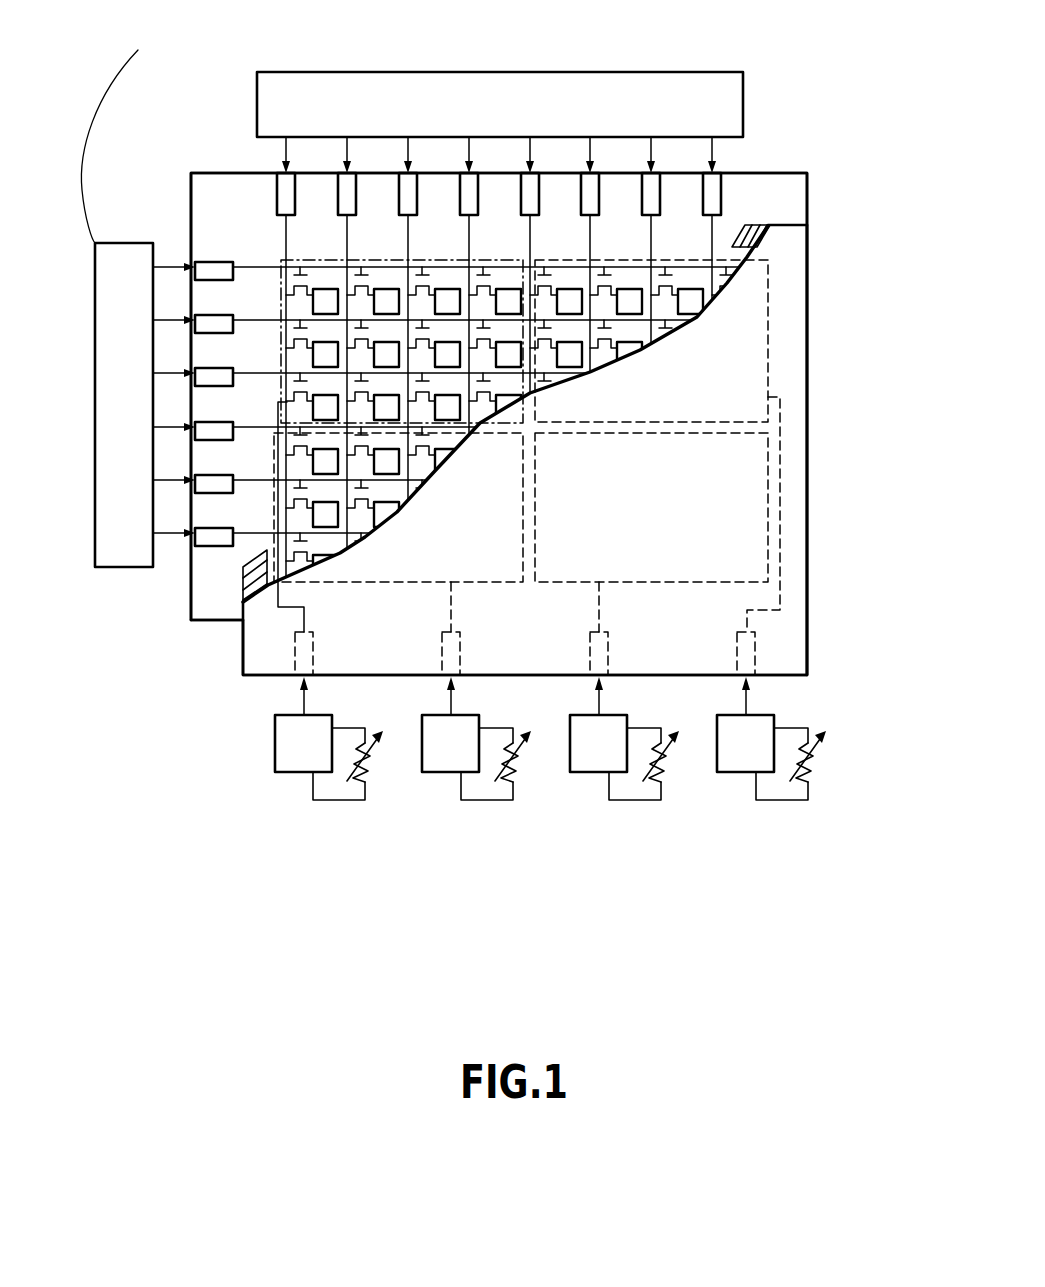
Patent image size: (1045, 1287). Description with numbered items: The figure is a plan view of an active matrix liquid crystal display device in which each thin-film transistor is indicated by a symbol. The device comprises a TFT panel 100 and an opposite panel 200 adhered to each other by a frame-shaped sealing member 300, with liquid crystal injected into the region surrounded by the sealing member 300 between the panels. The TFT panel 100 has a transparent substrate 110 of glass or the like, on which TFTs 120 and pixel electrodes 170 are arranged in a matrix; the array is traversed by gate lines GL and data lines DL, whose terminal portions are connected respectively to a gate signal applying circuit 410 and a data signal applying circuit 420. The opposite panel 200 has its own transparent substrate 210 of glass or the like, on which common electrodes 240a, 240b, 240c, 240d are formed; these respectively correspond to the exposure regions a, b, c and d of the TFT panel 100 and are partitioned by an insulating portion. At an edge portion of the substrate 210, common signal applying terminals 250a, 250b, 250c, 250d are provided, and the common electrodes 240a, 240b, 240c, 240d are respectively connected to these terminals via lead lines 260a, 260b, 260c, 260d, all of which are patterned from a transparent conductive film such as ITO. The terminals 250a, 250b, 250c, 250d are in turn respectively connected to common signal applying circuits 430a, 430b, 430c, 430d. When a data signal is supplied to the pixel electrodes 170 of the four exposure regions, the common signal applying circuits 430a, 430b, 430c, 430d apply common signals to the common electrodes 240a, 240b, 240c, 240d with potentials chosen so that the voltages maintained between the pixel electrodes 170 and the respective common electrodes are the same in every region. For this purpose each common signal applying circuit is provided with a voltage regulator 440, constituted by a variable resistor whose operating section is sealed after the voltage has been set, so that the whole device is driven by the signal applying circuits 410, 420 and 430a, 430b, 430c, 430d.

The TFT panel 100 is at (240, 168).
The transparent substrate 110 is at (787, 185).
The opposite panel 200 is at (243, 653).
The transparent substrate 210 is at (801, 654).
The TFT 120 is at (490, 280).
The pixel electrode 170 is at (627, 300).
The sealing member 300 is at (760, 225).
The common electrode 240a is at (310, 260).
The common electrode 240b is at (768, 330).
The common electrode 240c is at (300, 585).
The common electrode 240d is at (758, 467).
The lead line 260a is at (237, 568).
The lead line 260b is at (781, 522).
The lead line 260c is at (452, 612).
The lead line 260d is at (600, 612).
The common signal applying terminal 250a is at (308, 650).
The common signal applying terminal 250b is at (751, 650).
The common signal applying terminal 250c is at (456, 650).
The common signal applying terminal 250d is at (604, 650).
The gate signal applying circuit 410 is at (108, 570).
The data signal applying circuit 420 is at (706, 72).
The common signal applying circuit 430a is at (292, 772).
The common signal applying circuit 430b is at (735, 772).
The common signal applying circuit 430c is at (440, 772).
The common signal applying circuit 430d is at (588, 772).
The voltage regulator 440 is at (342, 812).
The data line DL is at (286, 245).
The gate line GL is at (247, 268).